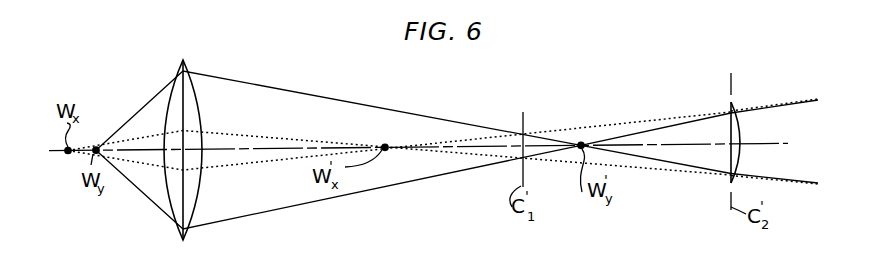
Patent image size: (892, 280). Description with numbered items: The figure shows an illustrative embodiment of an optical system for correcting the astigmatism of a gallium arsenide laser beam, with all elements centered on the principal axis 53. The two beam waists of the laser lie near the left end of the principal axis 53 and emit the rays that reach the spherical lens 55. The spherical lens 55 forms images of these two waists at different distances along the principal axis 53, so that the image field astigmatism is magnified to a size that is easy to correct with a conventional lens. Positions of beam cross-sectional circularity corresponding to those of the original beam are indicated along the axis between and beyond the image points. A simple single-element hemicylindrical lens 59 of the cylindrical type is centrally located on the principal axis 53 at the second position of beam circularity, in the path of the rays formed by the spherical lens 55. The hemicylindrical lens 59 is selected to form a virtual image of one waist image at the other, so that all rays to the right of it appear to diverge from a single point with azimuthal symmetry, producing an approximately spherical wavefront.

The principal axis 53 is at (778, 144).
The spherical lens 55 is at (195, 108).
The hemicylindrical lens 59 is at (738, 132).